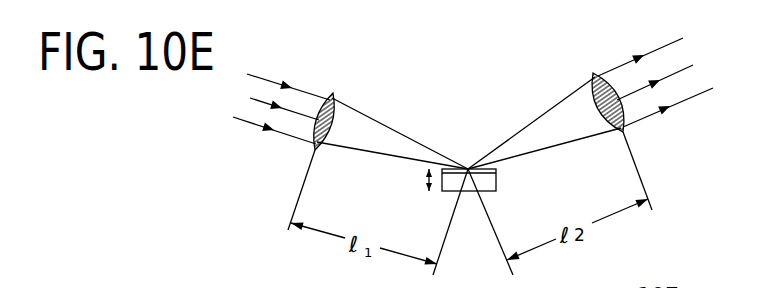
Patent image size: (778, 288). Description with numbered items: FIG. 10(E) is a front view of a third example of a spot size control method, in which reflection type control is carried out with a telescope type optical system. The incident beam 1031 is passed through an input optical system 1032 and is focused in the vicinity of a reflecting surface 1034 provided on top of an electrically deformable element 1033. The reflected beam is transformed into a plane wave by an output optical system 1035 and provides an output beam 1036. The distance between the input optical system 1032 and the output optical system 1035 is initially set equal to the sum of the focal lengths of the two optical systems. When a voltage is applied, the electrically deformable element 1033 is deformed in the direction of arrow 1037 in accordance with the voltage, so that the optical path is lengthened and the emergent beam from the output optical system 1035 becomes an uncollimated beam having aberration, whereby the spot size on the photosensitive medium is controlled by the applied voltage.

The incident beam 1031 is at (281, 95).
The input optical system 1032 is at (333, 93).
The electrically deformable element 1033 is at (469, 191).
The reflecting surface 1034 is at (481, 167).
The output optical system 1035 is at (593, 73).
The output beam 1036 is at (655, 69).
The arrow 1037 is at (427, 181).